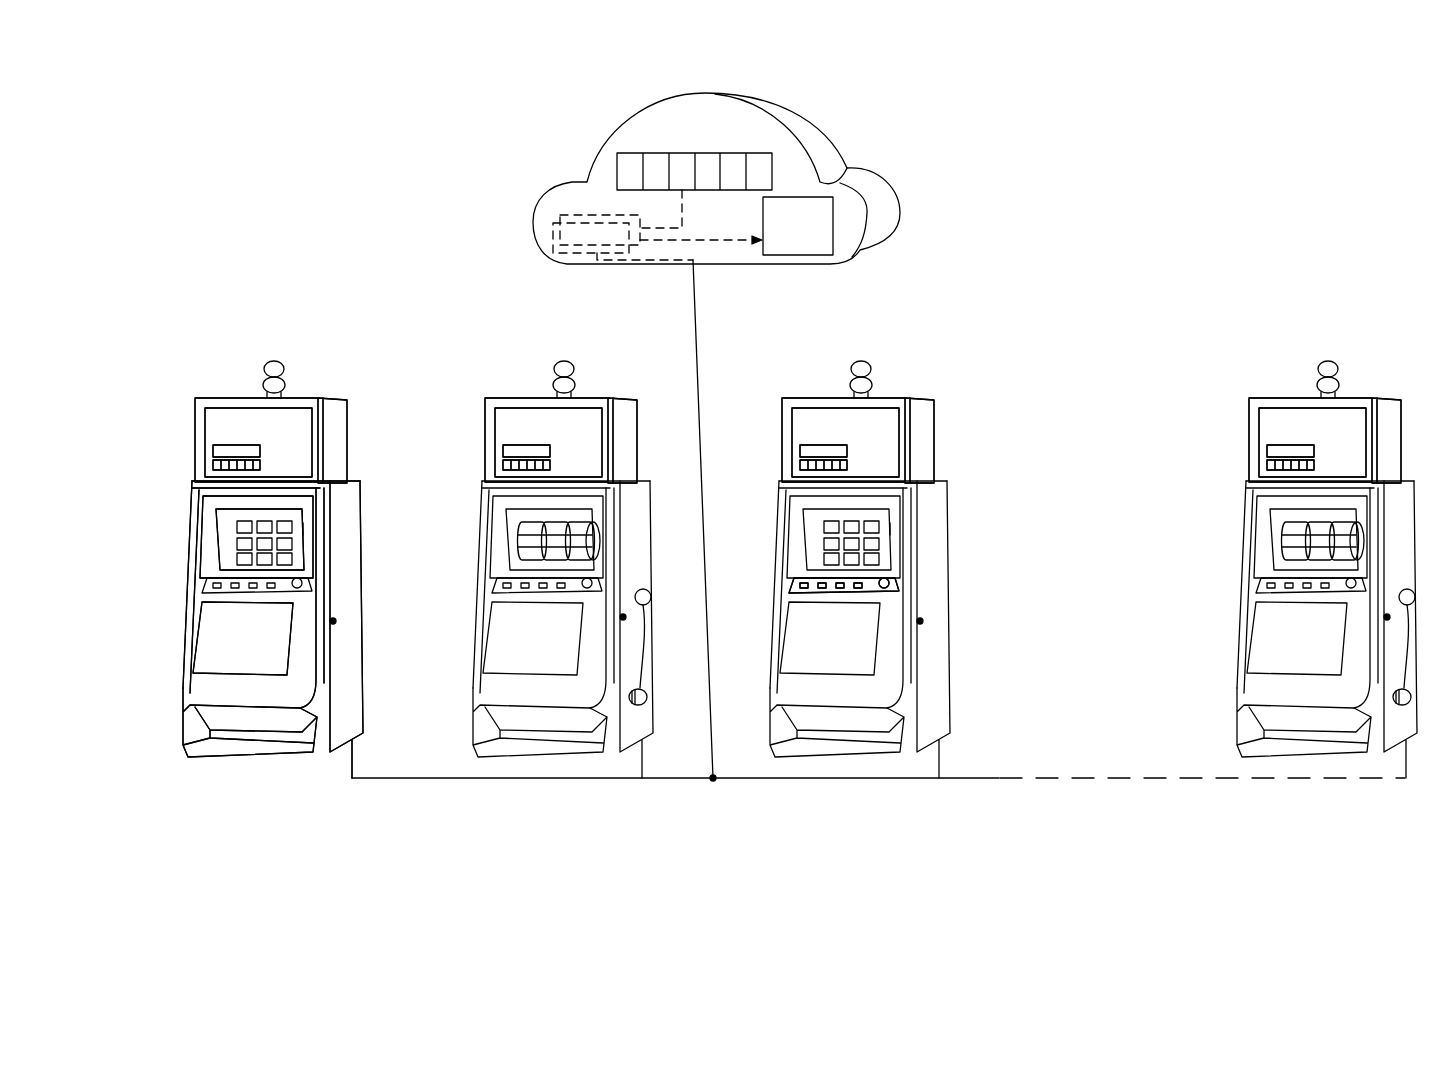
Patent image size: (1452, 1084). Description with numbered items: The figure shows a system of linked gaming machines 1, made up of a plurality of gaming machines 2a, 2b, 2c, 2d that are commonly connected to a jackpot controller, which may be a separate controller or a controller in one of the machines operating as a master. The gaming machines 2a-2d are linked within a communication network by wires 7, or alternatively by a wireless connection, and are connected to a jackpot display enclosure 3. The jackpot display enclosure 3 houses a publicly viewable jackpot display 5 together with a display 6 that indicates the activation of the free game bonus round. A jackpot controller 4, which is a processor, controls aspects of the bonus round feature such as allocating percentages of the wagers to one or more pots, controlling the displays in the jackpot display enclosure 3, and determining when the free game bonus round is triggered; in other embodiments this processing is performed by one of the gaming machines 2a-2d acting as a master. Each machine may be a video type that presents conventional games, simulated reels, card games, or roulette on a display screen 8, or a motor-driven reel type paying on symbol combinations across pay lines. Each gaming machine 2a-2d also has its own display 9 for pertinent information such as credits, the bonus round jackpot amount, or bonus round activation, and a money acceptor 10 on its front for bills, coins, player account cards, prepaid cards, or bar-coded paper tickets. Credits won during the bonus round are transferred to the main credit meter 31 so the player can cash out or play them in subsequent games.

The system of linked gaming machines 1 is at (435, 793).
The gaming machine 2a is at (270, 772).
The gaming machine 2b is at (585, 765).
The gaming machine 2c is at (843, 770).
The gaming machine 2d is at (1322, 765).
The jackpot display enclosure 3 is at (912, 202).
The jackpot controller 4 is at (553, 237).
The jackpot display 5 is at (657, 148).
The display 6 is at (798, 188).
The wires 7 is at (747, 782).
The display screen 8 is at (331, 481).
The display 9 is at (203, 465).
The money acceptor 10 is at (905, 571).
The main credit meter 31 is at (224, 450).